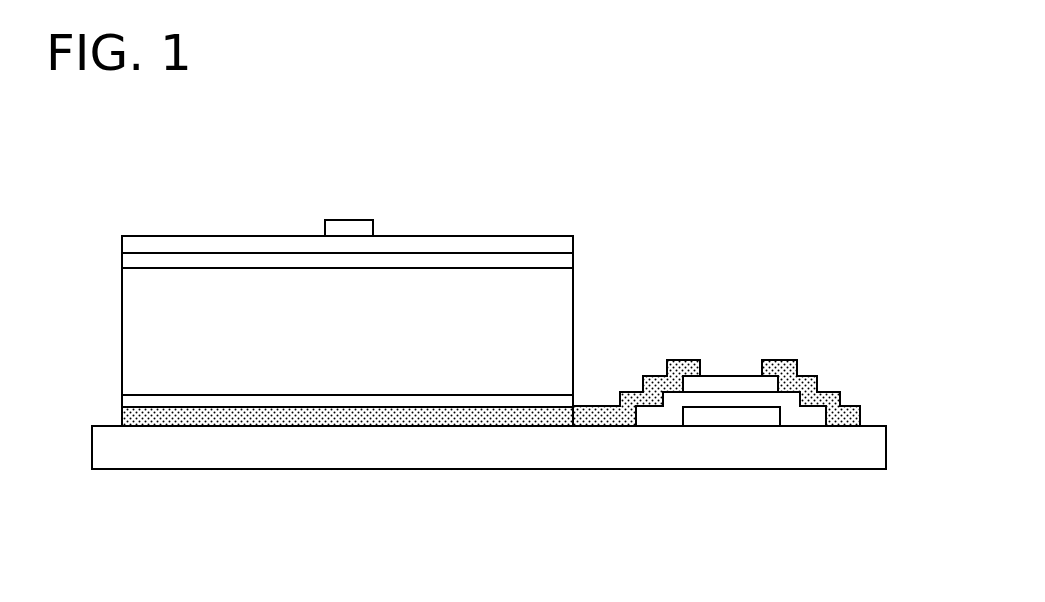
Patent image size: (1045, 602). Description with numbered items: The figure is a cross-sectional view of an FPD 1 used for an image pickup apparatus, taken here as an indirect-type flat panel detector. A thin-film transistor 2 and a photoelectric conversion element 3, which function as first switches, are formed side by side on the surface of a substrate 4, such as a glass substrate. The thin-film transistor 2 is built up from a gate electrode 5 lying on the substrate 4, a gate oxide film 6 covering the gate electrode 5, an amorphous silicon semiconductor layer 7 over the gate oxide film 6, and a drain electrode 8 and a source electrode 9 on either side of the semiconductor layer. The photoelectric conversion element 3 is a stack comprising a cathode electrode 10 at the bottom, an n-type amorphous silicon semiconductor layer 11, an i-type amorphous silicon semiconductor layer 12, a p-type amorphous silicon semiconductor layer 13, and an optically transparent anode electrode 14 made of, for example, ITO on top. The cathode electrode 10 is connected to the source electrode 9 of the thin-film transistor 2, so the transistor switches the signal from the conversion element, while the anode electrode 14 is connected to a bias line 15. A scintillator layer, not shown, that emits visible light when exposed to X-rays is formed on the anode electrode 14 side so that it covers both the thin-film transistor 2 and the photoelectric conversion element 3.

The FPD 1 is at (258, 485).
The thin-film transistor 2 is at (815, 341).
The photoelectric conversion element 3 is at (478, 203).
The substrate 4 is at (887, 443).
The gate electrode 5 is at (722, 420).
The gate oxide film 6 is at (804, 420).
The amorphous silicon semiconductor layer 7 is at (732, 375).
The drain electrode 8 is at (841, 392).
The source electrode 9 is at (660, 380).
The cathode electrode 10 is at (122, 417).
The n-type amorphous silicon semiconductor layer 11 is at (122, 402).
The i-type amorphous silicon semiconductor layer 12 is at (122, 334).
The p-type amorphous silicon semiconductor layer 13 is at (122, 259).
The anode electrode 14 is at (122, 245).
The bias line 15 is at (346, 219).